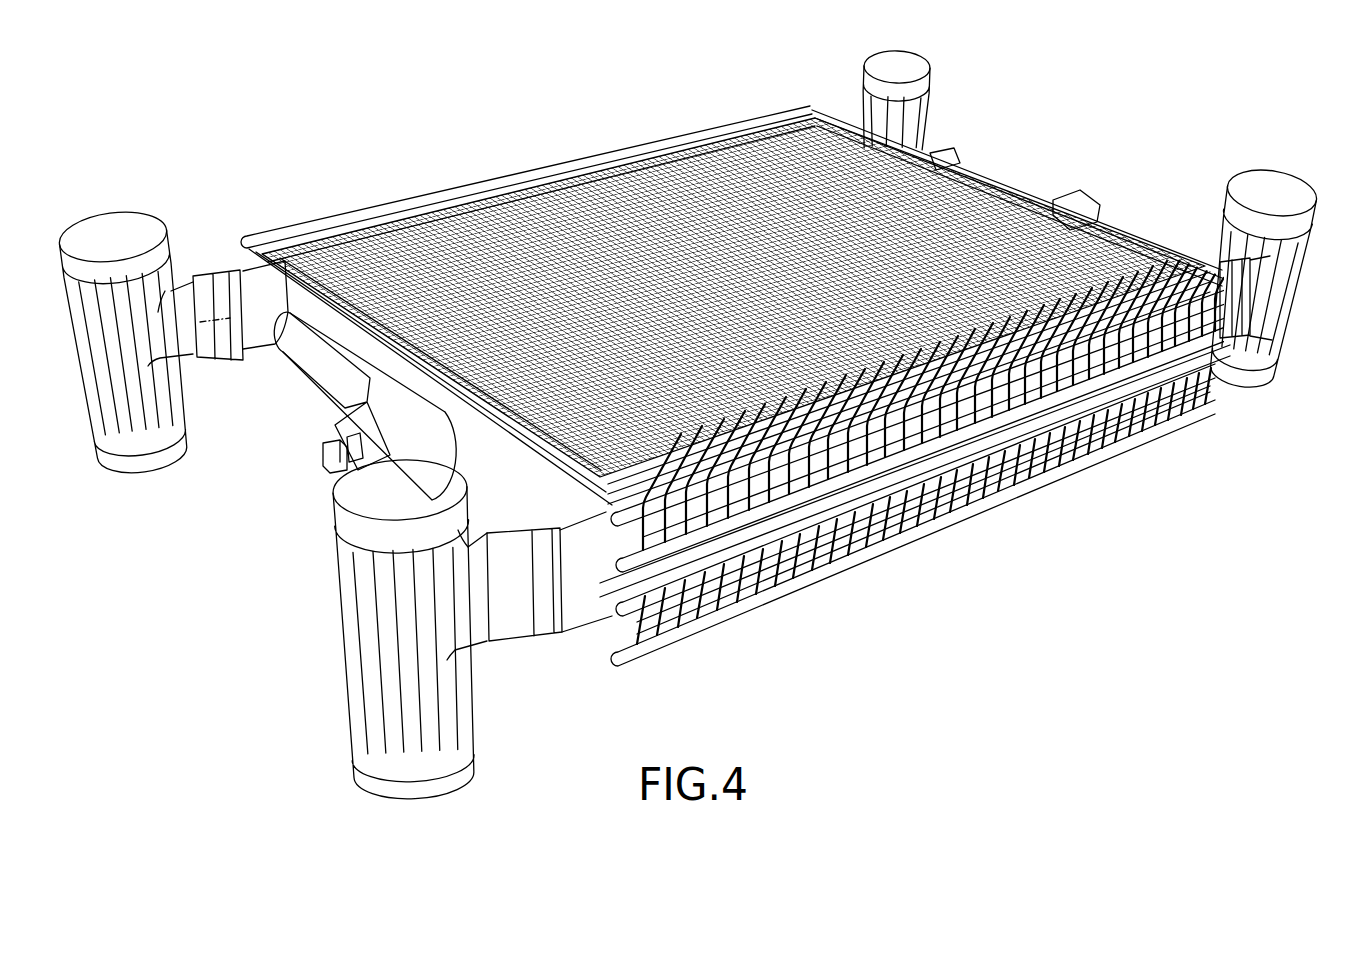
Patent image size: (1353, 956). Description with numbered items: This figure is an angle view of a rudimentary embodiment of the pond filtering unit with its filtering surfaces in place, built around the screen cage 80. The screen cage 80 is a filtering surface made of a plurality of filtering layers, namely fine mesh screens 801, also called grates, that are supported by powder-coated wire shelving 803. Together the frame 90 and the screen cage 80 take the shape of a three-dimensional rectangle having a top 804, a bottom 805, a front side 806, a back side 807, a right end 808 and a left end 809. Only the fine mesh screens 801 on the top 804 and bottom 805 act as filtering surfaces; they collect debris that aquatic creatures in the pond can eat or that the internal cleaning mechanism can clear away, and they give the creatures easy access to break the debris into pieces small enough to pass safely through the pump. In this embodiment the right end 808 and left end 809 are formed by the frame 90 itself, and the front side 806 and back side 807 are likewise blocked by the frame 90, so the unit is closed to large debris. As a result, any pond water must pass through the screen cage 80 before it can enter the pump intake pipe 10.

The pump intake pipe 10 is at (333, 465).
The screen cage 80 is at (993, 487).
The frame 90 is at (240, 276).
The fine mesh screens 801 is at (632, 331).
The powder-coated wire shelving 803 is at (318, 272).
The top 804 is at (807, 148).
The bottom 805 is at (973, 517).
The front side 806 is at (357, 404).
The back side 807 is at (1022, 183).
The right end 808 is at (829, 507).
The left end 809 is at (510, 170).